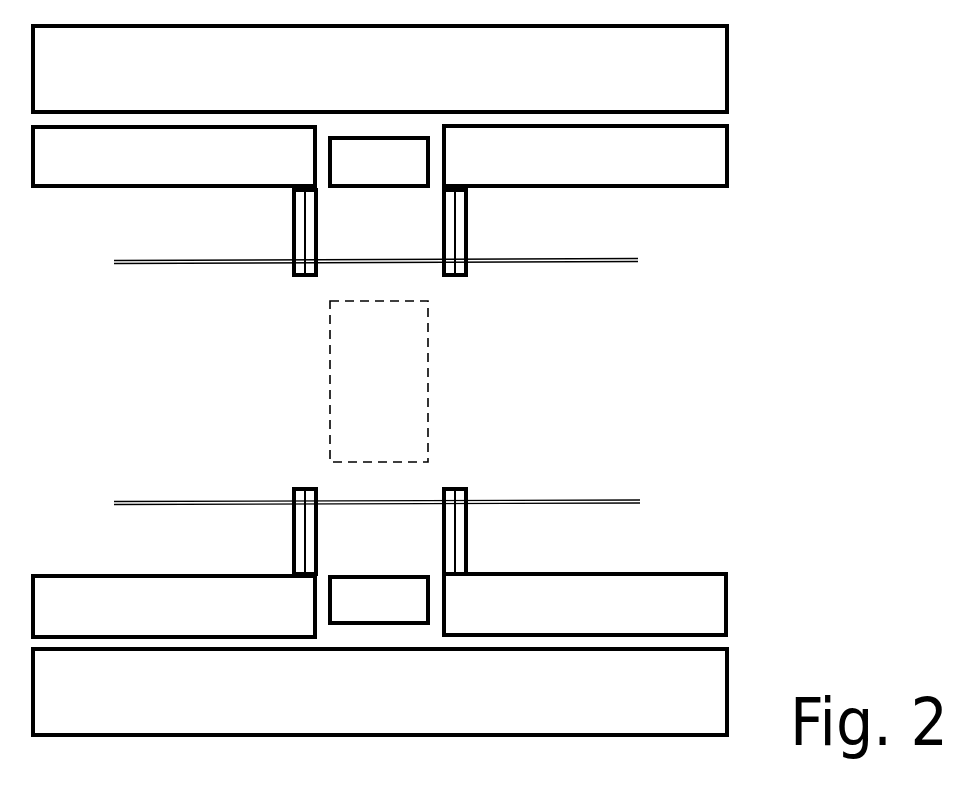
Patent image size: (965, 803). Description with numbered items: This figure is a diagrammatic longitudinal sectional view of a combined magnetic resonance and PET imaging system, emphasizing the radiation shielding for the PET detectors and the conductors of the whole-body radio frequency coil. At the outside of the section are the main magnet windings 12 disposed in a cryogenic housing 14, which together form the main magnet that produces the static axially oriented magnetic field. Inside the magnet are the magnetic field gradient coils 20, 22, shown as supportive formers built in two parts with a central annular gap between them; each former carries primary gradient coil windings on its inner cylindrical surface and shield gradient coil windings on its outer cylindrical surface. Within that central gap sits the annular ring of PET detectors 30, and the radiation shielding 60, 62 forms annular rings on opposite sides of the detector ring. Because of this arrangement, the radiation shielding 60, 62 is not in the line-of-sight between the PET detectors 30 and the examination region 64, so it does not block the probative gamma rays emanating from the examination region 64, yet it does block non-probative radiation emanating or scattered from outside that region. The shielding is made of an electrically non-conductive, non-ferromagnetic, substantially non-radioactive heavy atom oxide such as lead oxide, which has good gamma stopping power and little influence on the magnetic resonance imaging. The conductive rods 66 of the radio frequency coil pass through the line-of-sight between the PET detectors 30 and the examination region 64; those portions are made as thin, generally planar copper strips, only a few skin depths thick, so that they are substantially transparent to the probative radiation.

The main magnet windings 12 is at (368, 87).
The cryogenic housing 14 is at (420, 87).
The magnetic field gradient coil 20 is at (192, 176).
The magnetic field gradient coil 22 is at (602, 175).
The PET detectors 30 is at (396, 178).
The radiation shielding 60 is at (441, 208).
The radiation shielding 62 is at (292, 213).
The examination region 64 is at (396, 400).
The conductive rods 66 is at (625, 262).